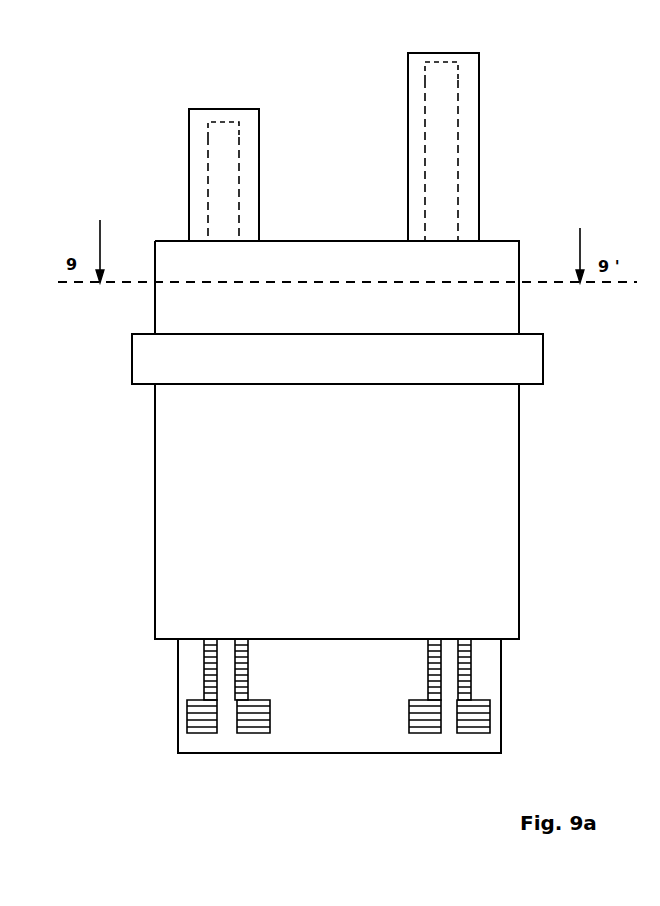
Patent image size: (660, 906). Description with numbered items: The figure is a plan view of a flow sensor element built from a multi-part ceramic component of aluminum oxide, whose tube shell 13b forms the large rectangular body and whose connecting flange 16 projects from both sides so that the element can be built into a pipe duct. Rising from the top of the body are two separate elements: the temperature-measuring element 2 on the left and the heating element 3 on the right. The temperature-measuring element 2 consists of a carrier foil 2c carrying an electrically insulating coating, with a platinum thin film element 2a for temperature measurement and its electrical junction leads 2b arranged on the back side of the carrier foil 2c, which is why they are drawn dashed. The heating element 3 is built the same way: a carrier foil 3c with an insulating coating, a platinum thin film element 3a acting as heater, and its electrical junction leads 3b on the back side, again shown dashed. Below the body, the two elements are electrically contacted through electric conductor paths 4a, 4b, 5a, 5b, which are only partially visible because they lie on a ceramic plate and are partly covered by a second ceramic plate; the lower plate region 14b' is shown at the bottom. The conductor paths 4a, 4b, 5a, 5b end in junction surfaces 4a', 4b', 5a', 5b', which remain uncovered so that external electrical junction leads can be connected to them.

The temperature-measuring element 2 is at (189, 146).
The platinum thin film element 2a is at (224, 130).
The electrical junction leads 2b is at (239, 220).
The carrier foil 2c is at (202, 219).
The heating element 3 is at (479, 110).
The platinum thin film element 3a is at (445, 70).
The electrical junction leads 3b is at (425, 213).
The carrier foil 3c is at (472, 219).
The connecting flange 16 is at (145, 364).
The tube shell 13b is at (178, 542).
The base plate 14b' is at (339, 725).
The electric conductor path 4a is at (165, 669).
The electric conductor path 4b is at (180, 669).
The electric conductor path 5a is at (503, 669).
The electric conductor path 5b is at (517, 668).
The junction surface 4a' is at (197, 756).
The junction surface 4b' is at (249, 756).
The junction surface 5a' is at (419, 756).
The junction surface 5b' is at (471, 756).